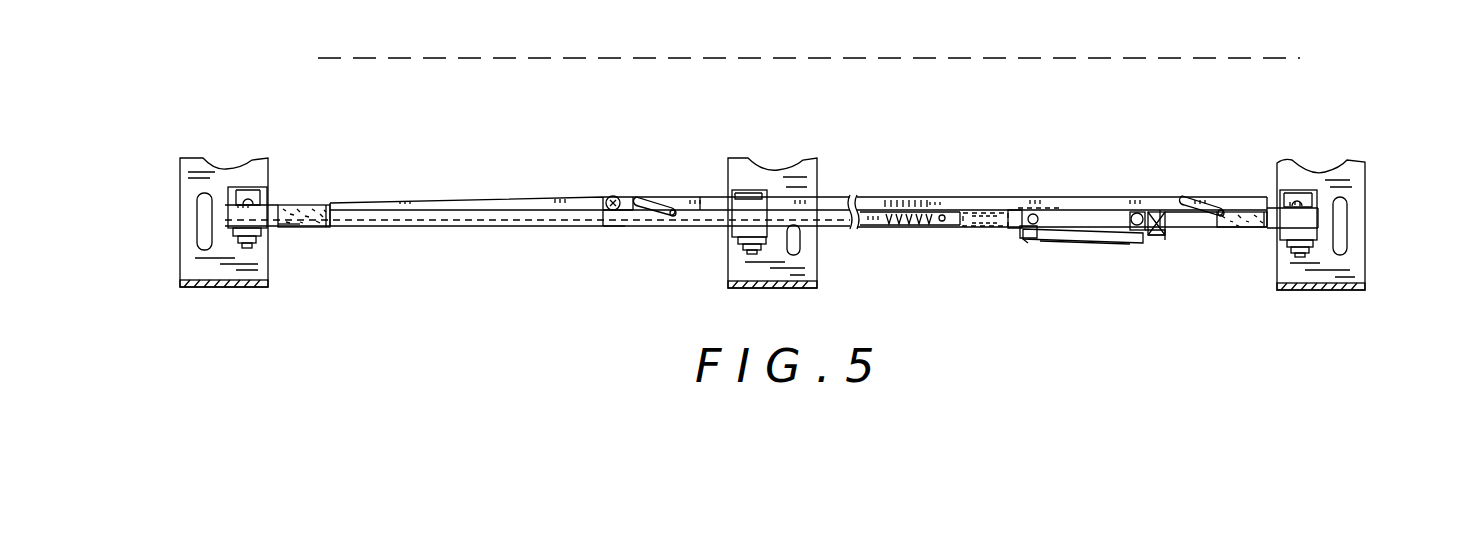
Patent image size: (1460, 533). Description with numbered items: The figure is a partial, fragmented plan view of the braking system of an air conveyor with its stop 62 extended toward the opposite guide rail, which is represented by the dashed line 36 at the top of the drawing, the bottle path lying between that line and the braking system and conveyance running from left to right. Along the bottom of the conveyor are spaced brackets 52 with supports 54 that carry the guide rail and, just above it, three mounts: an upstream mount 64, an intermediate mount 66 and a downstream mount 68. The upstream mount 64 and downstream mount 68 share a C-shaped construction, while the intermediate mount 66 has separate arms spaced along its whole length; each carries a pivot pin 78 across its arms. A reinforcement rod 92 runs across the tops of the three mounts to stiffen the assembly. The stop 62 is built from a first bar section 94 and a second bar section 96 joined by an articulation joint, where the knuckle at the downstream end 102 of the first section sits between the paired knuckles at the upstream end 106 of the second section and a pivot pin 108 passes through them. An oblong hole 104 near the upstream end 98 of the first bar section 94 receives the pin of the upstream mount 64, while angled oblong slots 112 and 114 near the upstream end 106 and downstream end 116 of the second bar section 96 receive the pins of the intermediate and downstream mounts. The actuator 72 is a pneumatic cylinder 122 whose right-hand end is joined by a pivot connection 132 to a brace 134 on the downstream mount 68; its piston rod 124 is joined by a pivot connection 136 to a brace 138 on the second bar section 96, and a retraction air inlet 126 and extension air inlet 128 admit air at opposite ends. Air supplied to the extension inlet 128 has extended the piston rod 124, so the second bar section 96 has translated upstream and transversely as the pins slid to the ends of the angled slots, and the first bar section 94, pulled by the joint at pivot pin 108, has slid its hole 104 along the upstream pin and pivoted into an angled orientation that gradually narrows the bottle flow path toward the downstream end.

The reference line 36 is at (1028, 56).
The bracket 52 is at (218, 288).
The support 54 is at (262, 232).
The stop 62 is at (937, 307).
The upstream mount 64 is at (240, 217).
The intermediate mount 66 is at (772, 208).
The downstream mount 68 is at (1315, 217).
The actuator 72 is at (1088, 243).
The pivot pin 78 is at (327, 208).
The reinforcement rod 92 is at (470, 220).
The first bar section 94 is at (525, 202).
The second bar section 96 is at (965, 207).
The upstream end 98 is at (280, 228).
The downstream end 102 is at (632, 198).
The hole 104 is at (307, 198).
The upstream end 106 is at (607, 200).
The pivot pin 108 is at (610, 224).
The oblong slot 112 is at (650, 203).
The oblong slot 114 is at (1193, 207).
The downstream end 116 is at (1223, 212).
The cylinder 122 is at (1122, 230).
The piston rod 124 is at (982, 233).
The retraction air inlet 126 is at (1032, 243).
The extension air inlet 128 is at (1165, 245).
The pivot connection 132 is at (1158, 242).
The brace 134 is at (1197, 230).
The pivot connection 136 is at (942, 224).
The brace 138 is at (910, 224).